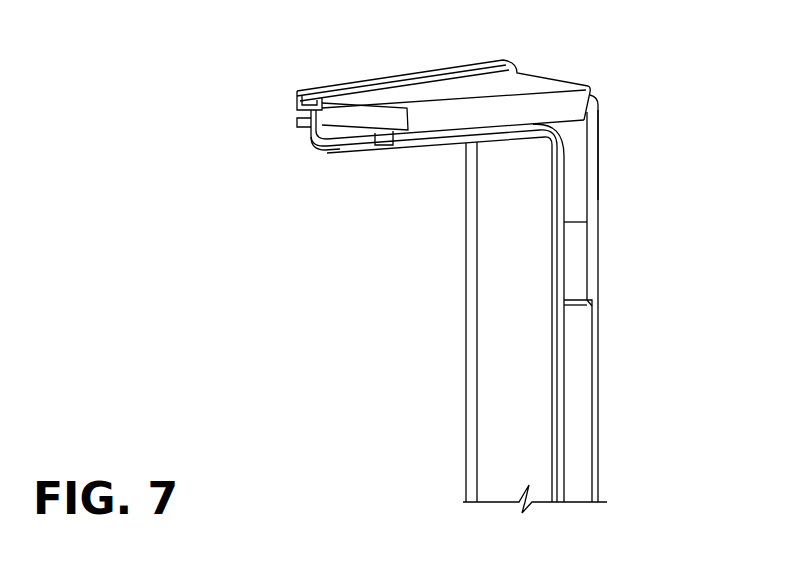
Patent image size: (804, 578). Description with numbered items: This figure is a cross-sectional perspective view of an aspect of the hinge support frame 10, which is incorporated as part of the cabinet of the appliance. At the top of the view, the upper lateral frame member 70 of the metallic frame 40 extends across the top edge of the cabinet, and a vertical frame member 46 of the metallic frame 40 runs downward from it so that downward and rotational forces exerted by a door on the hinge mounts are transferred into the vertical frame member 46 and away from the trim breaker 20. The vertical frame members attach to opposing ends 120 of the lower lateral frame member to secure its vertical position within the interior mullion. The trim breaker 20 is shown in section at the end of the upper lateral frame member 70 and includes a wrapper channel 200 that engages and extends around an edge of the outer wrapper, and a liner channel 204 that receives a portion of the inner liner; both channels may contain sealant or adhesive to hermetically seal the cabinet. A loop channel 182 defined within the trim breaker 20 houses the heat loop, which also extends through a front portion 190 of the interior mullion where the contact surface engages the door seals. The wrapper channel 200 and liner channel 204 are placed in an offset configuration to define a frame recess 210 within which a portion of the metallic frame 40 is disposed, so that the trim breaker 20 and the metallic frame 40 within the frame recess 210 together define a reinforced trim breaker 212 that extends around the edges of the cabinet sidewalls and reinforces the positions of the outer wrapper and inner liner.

The hinge support frame 10 is at (631, 170).
The trim breaker 20 is at (353, 150).
The metallic frame 40 is at (612, 334).
The vertical frame member 46 is at (577, 376).
The upper lateral frame member 70 is at (514, 82).
The opposing ends 120 is at (603, 126).
The loop channel 182 is at (284, 139).
The front portion 190 is at (289, 99).
The wrapper channel 200 is at (328, 91).
The liner channel 204 is at (397, 160).
The frame recess 210 is at (352, 122).
The reinforced trim breaker 212 is at (322, 152).